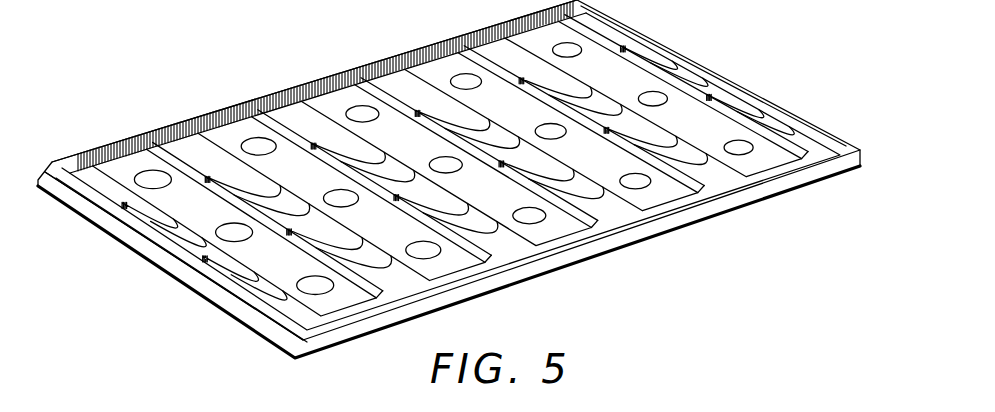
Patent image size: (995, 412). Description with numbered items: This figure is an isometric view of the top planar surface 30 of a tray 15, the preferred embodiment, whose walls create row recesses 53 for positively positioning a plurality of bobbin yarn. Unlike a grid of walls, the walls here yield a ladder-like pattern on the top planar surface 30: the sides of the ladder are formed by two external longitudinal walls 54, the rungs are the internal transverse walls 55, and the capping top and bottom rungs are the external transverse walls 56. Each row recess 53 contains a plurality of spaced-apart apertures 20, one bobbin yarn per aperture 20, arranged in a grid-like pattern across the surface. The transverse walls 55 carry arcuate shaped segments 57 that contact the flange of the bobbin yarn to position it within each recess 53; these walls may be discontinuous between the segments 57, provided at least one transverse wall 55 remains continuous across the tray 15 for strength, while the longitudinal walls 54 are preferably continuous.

The tray 15 is at (283, 343).
The apertures 20 is at (362, 309).
The top planar surface 30 is at (613, 78).
The row recesses 53 is at (127, 167).
The external longitudinal walls 54 is at (422, 50).
The internal transverse walls 55 is at (450, 181).
The external transverse walls 56 is at (240, 273).
The arcuate shaped segments 57 is at (193, 150).